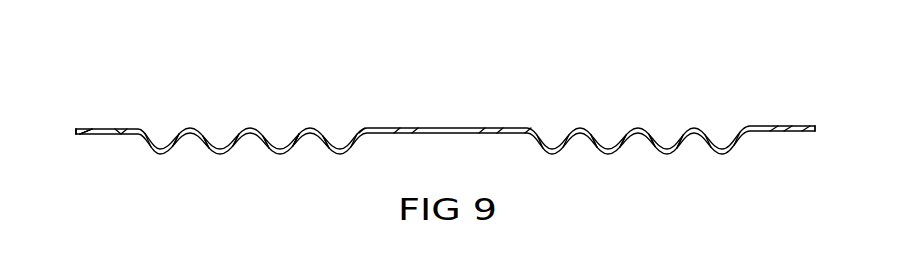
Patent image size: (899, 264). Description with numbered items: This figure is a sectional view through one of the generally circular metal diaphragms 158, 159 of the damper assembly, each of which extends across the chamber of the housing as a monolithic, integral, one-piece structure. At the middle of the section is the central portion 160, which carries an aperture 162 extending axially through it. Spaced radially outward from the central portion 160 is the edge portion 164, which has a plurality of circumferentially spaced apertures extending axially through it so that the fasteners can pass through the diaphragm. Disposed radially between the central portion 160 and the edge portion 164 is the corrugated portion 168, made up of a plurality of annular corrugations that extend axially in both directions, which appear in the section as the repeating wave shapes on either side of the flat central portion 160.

The diaphragm 158 is at (84, 135).
The upper diaphragm 159 is at (84, 135).
The central portion 160 is at (487, 128).
The aperture 162 is at (428, 128).
The edge portion 164 is at (808, 131).
The corrugated portion 168 is at (302, 155).